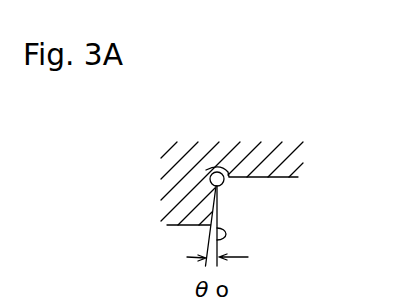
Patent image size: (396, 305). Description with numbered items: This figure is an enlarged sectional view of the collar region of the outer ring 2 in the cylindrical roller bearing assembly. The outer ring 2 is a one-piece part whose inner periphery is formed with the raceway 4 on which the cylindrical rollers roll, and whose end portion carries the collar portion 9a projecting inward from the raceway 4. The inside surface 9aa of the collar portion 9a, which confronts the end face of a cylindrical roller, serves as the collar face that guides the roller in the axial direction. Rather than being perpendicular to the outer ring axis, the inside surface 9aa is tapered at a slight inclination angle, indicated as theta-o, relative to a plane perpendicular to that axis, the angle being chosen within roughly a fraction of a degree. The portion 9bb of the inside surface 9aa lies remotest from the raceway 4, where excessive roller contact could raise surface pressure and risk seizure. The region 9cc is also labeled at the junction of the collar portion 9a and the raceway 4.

The outer ring 2 is at (304, 124).
The raceway 4 is at (283, 178).
The collar portion 9a is at (181, 202).
The inside surface 9aa is at (218, 220).
The portion of the inside surface remotest from the raceway 9bb is at (214, 236).
The ball portion 9cc is at (206, 170).